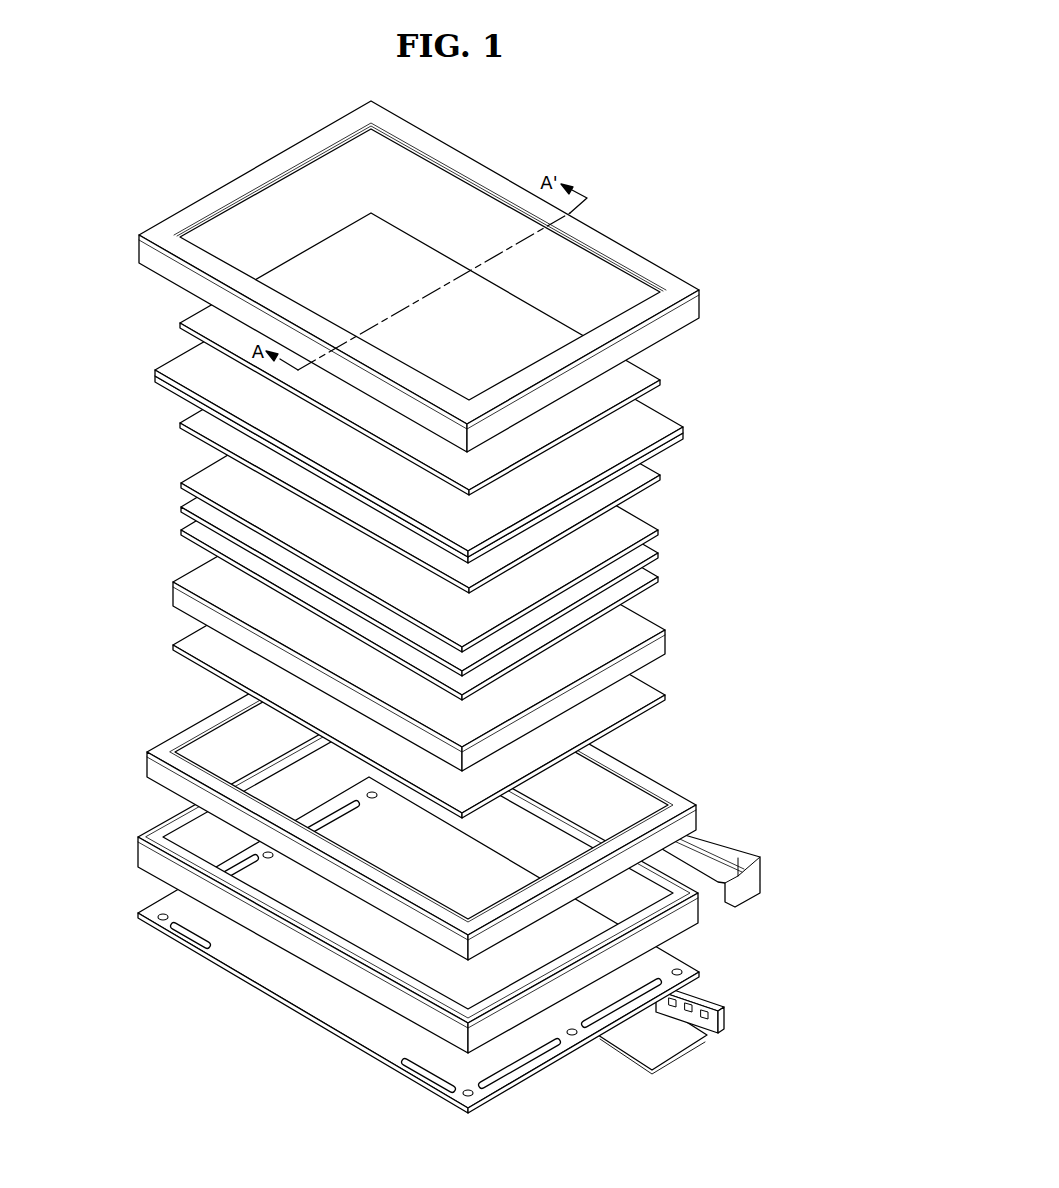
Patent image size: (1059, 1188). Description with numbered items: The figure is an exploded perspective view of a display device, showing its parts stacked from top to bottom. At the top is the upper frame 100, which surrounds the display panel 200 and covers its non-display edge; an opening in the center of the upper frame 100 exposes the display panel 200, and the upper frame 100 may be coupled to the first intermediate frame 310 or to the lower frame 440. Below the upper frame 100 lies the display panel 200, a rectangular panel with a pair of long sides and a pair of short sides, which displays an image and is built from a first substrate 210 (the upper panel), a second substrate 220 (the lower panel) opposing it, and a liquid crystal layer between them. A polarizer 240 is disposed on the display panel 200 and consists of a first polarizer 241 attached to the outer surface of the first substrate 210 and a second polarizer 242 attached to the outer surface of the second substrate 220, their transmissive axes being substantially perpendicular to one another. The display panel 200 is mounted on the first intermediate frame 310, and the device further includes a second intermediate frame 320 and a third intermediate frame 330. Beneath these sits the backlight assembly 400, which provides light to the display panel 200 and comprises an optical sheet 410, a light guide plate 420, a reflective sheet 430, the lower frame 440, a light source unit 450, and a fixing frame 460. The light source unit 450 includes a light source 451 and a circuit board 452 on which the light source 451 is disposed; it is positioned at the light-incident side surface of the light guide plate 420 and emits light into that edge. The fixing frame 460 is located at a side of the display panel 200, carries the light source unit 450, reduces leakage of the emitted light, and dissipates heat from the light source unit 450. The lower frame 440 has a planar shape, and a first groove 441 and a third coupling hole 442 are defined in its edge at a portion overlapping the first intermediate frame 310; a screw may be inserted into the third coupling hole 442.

The upper frame 100 is at (655, 271).
The display panel 200 is at (475, 404).
The first substrate 210 is at (660, 452).
The second substrate 220 is at (651, 413).
The polarizer 240 is at (356, 451).
The first polarizer 241 is at (108, 318).
The second polarizer 242 is at (205, 317).
The first intermediate frame 310 is at (680, 930).
The second intermediate frame 320 is at (683, 827).
The third intermediate frame 330 is at (727, 847).
The backlight assembly 400 is at (486, 768).
The optical sheet 410 is at (665, 525).
The light guide plate 420 is at (643, 628).
The reflective sheet 430 is at (643, 690).
The lower frame 440 is at (448, 945).
The first groove 441 is at (537, 1058).
The third coupling hole 442 is at (580, 1034).
The light source unit 450 is at (745, 1022).
The light source 451 is at (712, 1040).
The circuit board 452 is at (713, 1002).
The fixing frame 460 is at (676, 1058).